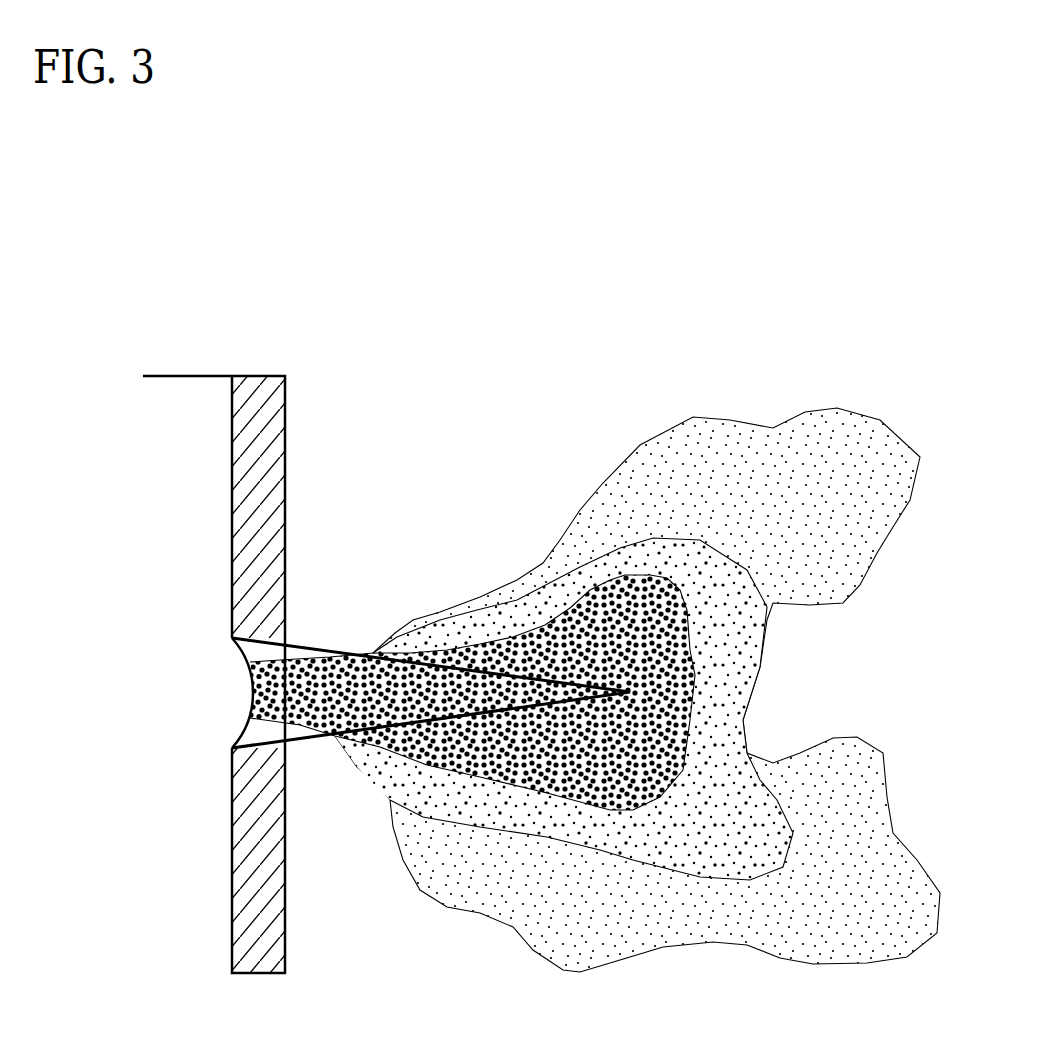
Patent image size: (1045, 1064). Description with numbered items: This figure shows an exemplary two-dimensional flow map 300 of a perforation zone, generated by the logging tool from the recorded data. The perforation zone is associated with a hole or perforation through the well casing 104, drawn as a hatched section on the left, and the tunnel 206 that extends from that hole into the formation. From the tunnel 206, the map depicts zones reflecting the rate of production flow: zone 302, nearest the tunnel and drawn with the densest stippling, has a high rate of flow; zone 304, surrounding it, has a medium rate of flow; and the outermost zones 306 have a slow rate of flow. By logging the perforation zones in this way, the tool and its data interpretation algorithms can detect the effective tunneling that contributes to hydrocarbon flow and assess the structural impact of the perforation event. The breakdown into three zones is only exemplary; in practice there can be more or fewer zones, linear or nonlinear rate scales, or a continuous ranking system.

The well casing 104 is at (284, 438).
The tunnel 206 is at (305, 750).
The two-dimensional flow map 300 is at (377, 272).
The zone 302 is at (347, 652).
The zone 304 is at (430, 637).
The zones 306 is at (703, 433).